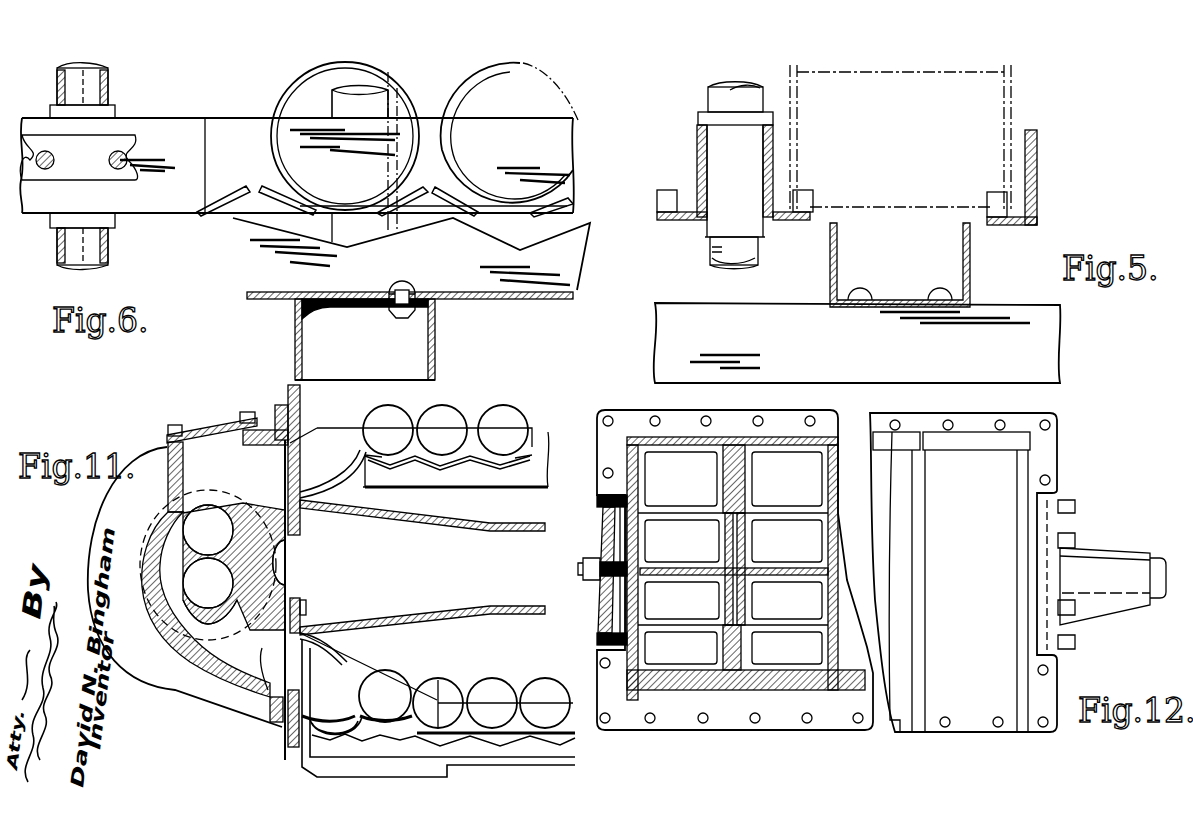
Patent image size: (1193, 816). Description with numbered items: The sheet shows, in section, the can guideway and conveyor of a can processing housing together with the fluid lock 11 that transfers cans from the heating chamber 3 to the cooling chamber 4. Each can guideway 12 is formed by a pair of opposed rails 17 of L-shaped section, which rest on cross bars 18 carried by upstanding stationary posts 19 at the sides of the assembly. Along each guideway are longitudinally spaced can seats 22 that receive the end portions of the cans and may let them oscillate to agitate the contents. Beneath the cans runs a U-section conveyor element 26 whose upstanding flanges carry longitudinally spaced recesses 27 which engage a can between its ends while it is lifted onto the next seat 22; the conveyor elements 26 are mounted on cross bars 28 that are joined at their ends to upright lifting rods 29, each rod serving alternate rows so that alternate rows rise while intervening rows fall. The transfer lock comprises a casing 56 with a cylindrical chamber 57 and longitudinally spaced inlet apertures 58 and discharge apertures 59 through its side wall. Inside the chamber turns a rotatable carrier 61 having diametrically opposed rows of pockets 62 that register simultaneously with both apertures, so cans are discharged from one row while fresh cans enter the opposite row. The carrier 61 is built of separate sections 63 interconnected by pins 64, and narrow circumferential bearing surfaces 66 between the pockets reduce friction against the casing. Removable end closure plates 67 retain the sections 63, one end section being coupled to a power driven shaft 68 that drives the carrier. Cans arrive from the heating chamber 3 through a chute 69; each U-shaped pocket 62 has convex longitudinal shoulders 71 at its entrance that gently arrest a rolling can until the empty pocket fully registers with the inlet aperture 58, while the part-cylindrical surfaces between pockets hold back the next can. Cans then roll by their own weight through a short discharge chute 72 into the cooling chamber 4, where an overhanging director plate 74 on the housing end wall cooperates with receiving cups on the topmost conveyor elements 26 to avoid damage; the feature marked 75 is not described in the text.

In FIG. 11, the heating chamber 3 is at (378, 520).
In FIG. 11, the cooling chamber 4 is at (460, 609).
In FIG. 11, the fluid lock 11 is at (172, 690).
In FIG. 12, the fluid lock 11 is at (932, 737).
In FIG. 6, the can guideway 12 is at (573, 158).
In FIG. 5, the can guideway 12 is at (958, 150).
In FIG. 11, the can guideway 12 is at (468, 430).
In FIG. 6, the rail 17 is at (248, 119).
In FIG. 5, the rail 17 is at (763, 176).
In FIG. 11, the rail 17 is at (522, 435).
In FIG. 6, the cross bar 18 is at (104, 206).
In FIG. 5, the cross bar 18 is at (716, 228).
In FIG. 5, the upstanding stationary post 19 is at (730, 250).
In FIG. 6, the can seat 22 is at (345, 204).
In FIG. 5, the can seat 22 is at (982, 218).
In FIG. 11, the can seat 22 is at (455, 460).
In FIG. 6, the conveyor element 26 is at (577, 270).
In FIG. 5, the conveyor element 26 is at (830, 278).
In FIG. 11, the conveyor element 26 is at (432, 478).
In FIG. 6, the recess 27 is at (285, 178).
In FIG. 5, the recess 27 is at (960, 243).
In FIG. 11, the recess 27 is at (428, 456).
In FIG. 6, the cross bar 28 is at (437, 338).
In FIG. 5, the cross bar 28 is at (857, 343).
In FIG. 6, the upright lifting rod 29 is at (340, 90).
In FIG. 11, the casing 56 is at (146, 556).
In FIG. 11, the cylindrical chamber 57 is at (210, 613).
In FIG. 11, the inlet aperture 58 is at (245, 440).
In FIG. 12, the inlet aperture 58 is at (765, 490).
In FIG. 11, the discharge aperture 59 is at (270, 715).
In FIG. 12, the discharge aperture 59 is at (755, 655).
In FIG. 11, the rotatable carrier 61 is at (286, 593).
In FIG. 11, the pocket 62 is at (208, 530).
In FIG. 12, the pocket 62 is at (698, 597).
In FIG. 12, the section 63 is at (726, 525).
In FIG. 11, the pin 64 is at (208, 583).
In FIG. 12, the pin 64 is at (828, 568).
In FIG. 12, the circumferential bearing surface 66 is at (828, 625).
In FIG. 12, the end closure plate 67 is at (600, 558).
In FIG. 12, the power driven shaft 68 is at (1152, 554).
In FIG. 11, the chute 69 is at (305, 495).
In FIG. 11, the longitudinal shoulder 71 is at (238, 510).
In FIG. 11, the discharge chute 72 is at (262, 660).
In FIG. 11, the director plate 74 is at (320, 645).
In FIG. 11, the trough 75 is at (340, 734).